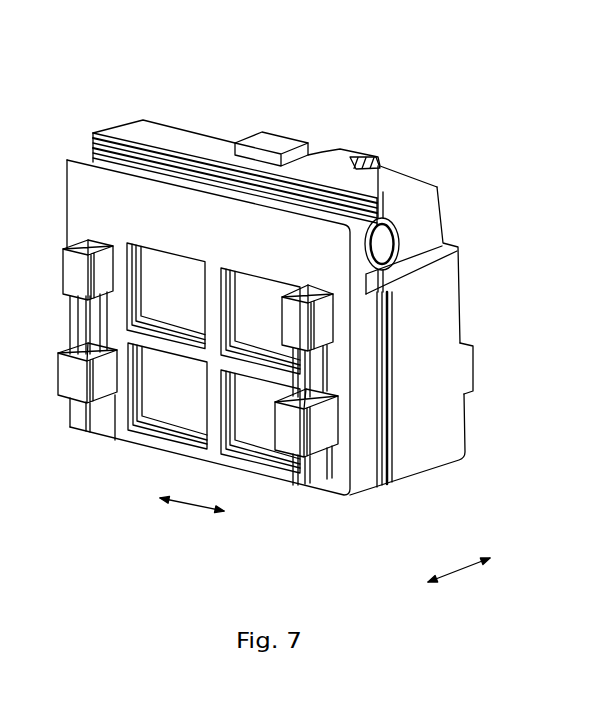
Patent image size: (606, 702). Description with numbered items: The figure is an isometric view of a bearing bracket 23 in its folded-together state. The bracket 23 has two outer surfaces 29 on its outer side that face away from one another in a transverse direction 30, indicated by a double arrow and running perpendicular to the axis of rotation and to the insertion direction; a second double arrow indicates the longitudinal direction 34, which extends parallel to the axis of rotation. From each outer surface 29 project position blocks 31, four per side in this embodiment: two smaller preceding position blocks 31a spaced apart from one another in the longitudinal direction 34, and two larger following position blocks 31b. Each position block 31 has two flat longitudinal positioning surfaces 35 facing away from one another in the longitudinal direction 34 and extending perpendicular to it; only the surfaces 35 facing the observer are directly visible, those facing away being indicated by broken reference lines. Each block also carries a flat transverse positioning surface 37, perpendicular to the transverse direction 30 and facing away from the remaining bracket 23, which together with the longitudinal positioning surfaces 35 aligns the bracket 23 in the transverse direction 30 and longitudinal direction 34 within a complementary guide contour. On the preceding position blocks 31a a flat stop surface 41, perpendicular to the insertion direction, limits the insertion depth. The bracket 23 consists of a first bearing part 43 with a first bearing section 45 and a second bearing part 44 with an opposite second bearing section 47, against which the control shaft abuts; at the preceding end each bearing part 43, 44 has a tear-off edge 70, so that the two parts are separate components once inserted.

The bearing bracket 23 is at (432, 128).
The outer surface 29 is at (220, 213).
The transverse direction 30 is at (462, 577).
The position block 31 is at (272, 332).
The preceding position block 31a is at (122, 246).
The following position block 31b is at (64, 413).
The longitudinal direction 34 is at (190, 508).
The longitudinal positioning surface 35 is at (62, 284).
The transverse positioning surface 37 is at (64, 268).
The stop surface 41 is at (90, 241).
The first bearing part 43 is at (434, 478).
The second bearing part 44 is at (371, 500).
The first bearing section 45 is at (410, 222).
The second bearing section 47 is at (350, 166).
The tear-off edge 70 is at (93, 135).